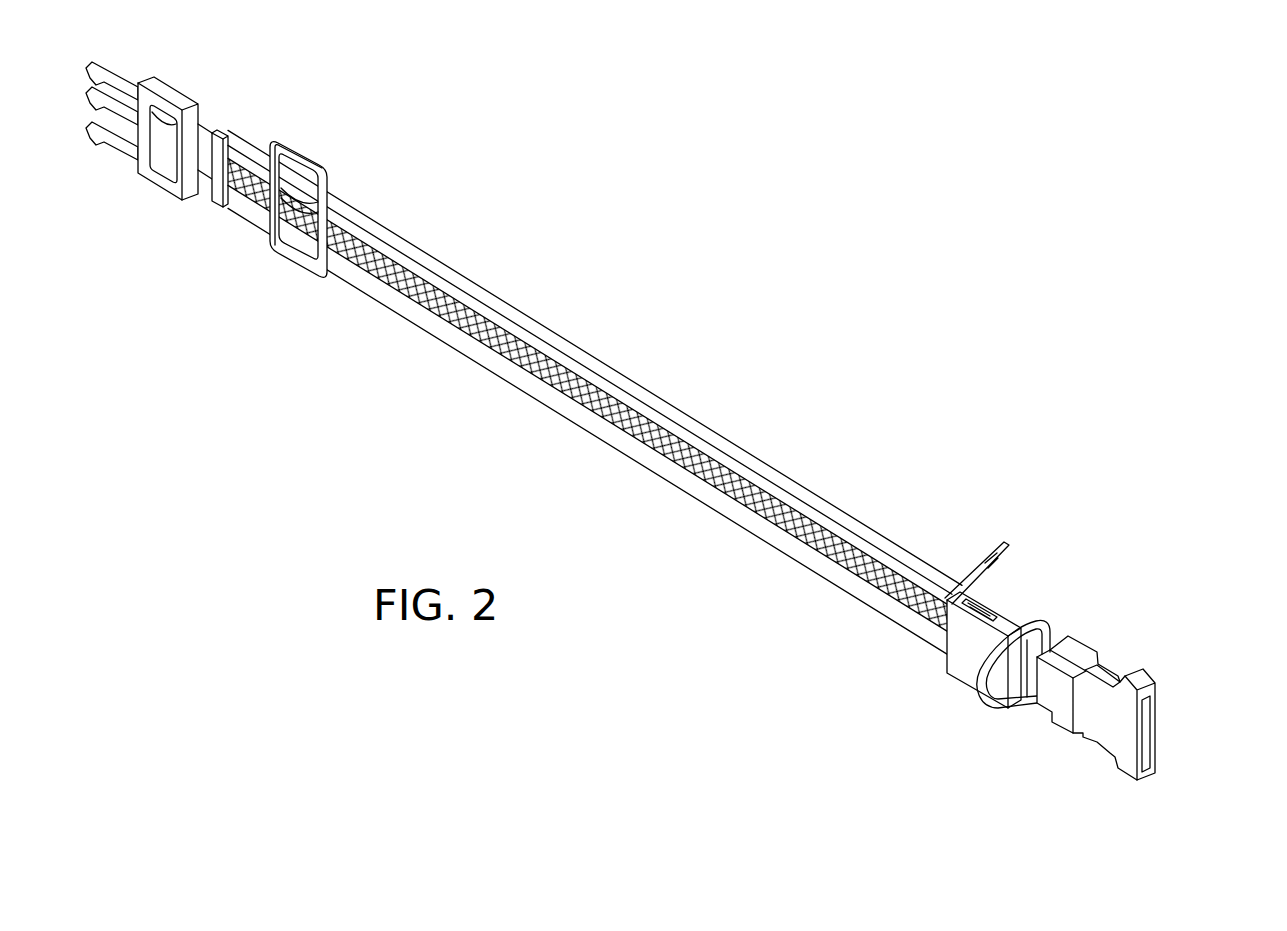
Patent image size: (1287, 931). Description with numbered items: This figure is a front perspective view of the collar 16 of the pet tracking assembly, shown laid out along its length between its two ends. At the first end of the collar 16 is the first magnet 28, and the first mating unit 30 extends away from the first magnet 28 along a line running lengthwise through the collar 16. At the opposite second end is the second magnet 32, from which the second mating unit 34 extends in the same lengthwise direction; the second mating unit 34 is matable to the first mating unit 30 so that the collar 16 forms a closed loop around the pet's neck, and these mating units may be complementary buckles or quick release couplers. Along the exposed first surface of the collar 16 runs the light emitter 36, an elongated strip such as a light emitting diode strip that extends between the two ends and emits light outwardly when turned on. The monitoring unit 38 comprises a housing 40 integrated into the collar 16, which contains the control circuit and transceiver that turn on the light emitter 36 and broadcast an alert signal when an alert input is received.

The collar 16 is at (785, 476).
The first magnet 28 is at (224, 138).
The first mating unit 30 is at (158, 95).
The second magnet 32 is at (1025, 695).
The second mating unit 34 is at (1140, 688).
The light emitter 36 is at (700, 468).
The monitoring unit 38 is at (1045, 699).
The housing 40 is at (947, 673).